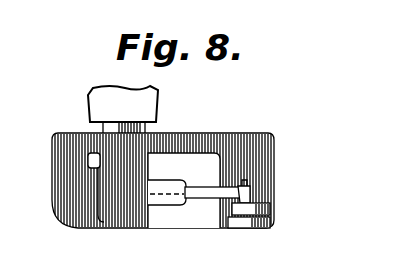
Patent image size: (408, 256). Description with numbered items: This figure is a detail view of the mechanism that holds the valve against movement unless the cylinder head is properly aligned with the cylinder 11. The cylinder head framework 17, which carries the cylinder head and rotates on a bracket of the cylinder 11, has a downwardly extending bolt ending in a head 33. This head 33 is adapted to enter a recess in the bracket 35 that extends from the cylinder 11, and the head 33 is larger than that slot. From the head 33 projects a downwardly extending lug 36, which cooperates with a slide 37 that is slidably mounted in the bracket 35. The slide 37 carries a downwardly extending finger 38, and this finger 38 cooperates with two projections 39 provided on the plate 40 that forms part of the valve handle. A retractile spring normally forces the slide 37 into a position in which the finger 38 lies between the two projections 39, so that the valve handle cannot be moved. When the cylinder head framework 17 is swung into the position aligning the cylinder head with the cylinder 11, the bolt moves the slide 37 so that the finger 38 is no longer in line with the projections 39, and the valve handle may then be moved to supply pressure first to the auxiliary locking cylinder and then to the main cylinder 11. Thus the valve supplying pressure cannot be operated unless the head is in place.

The cylinder 11 is at (274, 158).
The cylinder head framework 17 is at (158, 101).
The head 33 is at (148, 153).
The bracket 35 is at (66, 212).
The lug 36 is at (151, 166).
The slide 37 is at (200, 199).
The finger 38 is at (244, 185).
The projections 39 is at (250, 200).
The plate 40 is at (270, 223).